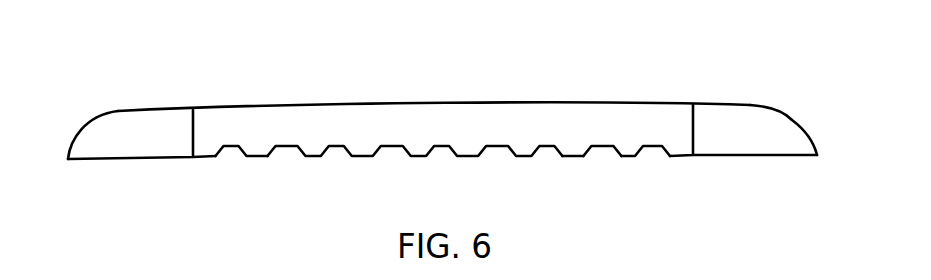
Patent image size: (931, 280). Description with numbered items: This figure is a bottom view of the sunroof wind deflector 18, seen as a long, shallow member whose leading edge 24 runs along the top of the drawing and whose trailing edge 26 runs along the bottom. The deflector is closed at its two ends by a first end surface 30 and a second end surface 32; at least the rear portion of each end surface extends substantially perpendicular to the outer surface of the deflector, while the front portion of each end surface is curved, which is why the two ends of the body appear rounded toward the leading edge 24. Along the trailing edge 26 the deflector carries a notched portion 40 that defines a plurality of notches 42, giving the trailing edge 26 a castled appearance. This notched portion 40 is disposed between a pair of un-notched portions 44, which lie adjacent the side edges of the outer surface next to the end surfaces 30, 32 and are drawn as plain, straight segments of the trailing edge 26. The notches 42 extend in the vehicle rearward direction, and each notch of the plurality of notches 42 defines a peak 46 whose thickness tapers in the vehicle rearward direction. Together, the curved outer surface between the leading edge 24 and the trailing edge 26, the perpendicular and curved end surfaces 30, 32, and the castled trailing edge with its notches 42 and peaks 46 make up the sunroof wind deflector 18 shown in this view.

The sunroof wind deflector 18 is at (444, 130).
The leading edge 24 is at (375, 103).
The trailing edge 26 is at (570, 156).
The first end surface 30 is at (809, 130).
The second end surface 32 is at (79, 133).
The notched portion 40 is at (238, 154).
The notches 42 is at (312, 156).
The un-notched portions 44 is at (129, 143).
The peak 46 is at (629, 157).